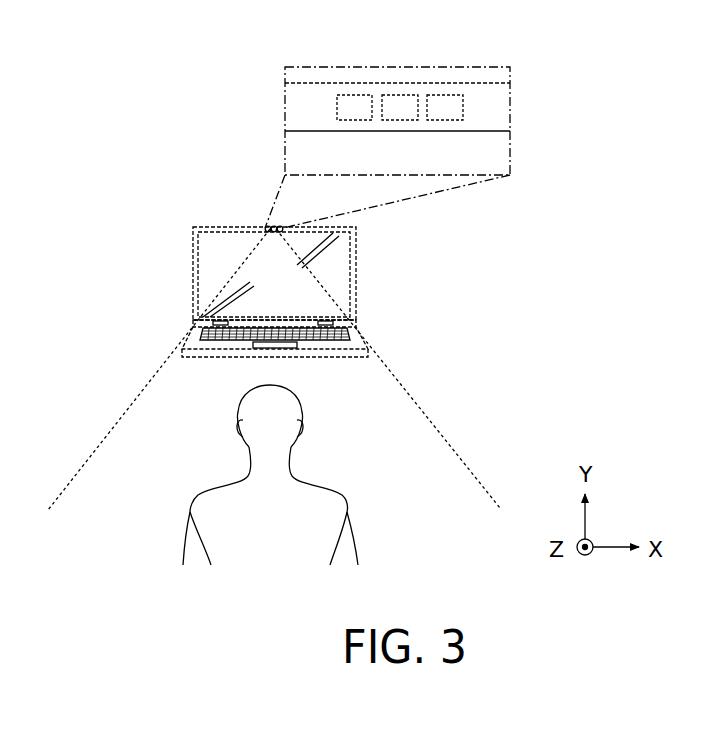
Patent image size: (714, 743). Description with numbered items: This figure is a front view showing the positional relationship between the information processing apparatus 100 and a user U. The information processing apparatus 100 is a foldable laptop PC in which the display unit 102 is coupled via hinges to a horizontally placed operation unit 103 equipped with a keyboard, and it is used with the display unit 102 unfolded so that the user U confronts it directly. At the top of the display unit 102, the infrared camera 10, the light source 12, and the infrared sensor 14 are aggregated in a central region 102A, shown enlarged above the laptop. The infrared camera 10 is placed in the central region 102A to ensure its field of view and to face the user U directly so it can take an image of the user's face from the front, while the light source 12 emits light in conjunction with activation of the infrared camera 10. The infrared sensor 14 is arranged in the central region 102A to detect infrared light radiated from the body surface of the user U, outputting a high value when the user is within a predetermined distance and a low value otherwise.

The information processing apparatus 100 is at (452, 290).
The display unit 102 is at (356, 278).
The central region 102A is at (257, 224).
The operation unit 103 is at (192, 343).
The infrared camera 10 is at (398, 122).
The light source 12 is at (358, 122).
The infrared sensor 14 is at (443, 122).
The user U is at (337, 490).